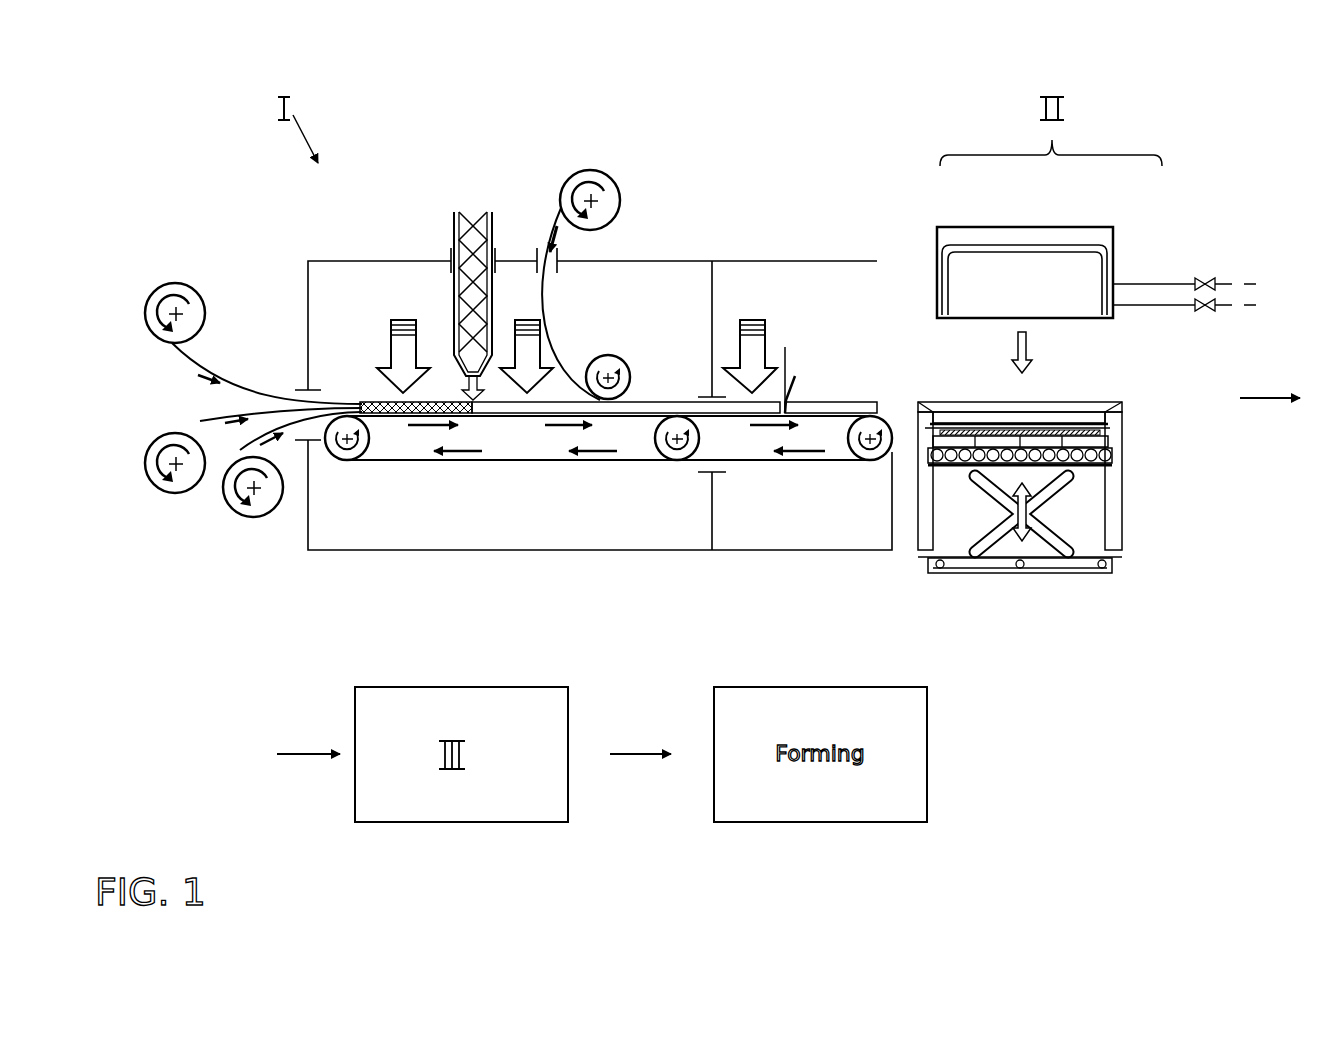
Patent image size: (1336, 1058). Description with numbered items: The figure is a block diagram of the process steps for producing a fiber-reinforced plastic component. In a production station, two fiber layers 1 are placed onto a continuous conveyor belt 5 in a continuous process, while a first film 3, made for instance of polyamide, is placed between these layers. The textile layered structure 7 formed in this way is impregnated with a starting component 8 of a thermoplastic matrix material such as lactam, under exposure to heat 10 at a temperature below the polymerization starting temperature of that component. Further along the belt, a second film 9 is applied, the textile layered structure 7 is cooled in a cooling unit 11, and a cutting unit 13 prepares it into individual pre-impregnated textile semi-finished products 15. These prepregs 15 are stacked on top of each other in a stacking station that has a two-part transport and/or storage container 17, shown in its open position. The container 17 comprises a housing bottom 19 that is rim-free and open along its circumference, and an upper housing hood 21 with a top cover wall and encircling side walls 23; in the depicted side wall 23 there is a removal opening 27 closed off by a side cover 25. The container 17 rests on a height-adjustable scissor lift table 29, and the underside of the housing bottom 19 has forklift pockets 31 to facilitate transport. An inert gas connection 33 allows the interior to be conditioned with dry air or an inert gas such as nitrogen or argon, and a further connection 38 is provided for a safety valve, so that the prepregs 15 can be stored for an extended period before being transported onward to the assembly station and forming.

The fiber layers 1 is at (202, 418).
The first film 3 is at (240, 448).
The continuous conveyor belt 5 is at (459, 462).
The textile layered structure 7 is at (375, 402).
The starting component 8 is at (471, 270).
The second film 9 is at (550, 217).
The heat 10 is at (402, 346).
The cooling unit 11 is at (752, 346).
The cutting unit 13 is at (785, 357).
The pre-impregnated textile semi-finished products 15 is at (825, 408).
The transport and/or storage container 17 is at (1053, 247).
The housing bottom 19 is at (1042, 435).
The upper housing hood 21 is at (954, 236).
The side walls 23 is at (938, 265).
The side cover 25 is at (1023, 270).
The removal opening 27 is at (1067, 252).
The scissor lift table 29 is at (1070, 482).
The forklift pockets 31 is at (990, 440).
The inert gas connection 33 is at (1240, 305).
The connection for a safety valve 38 is at (1240, 284).